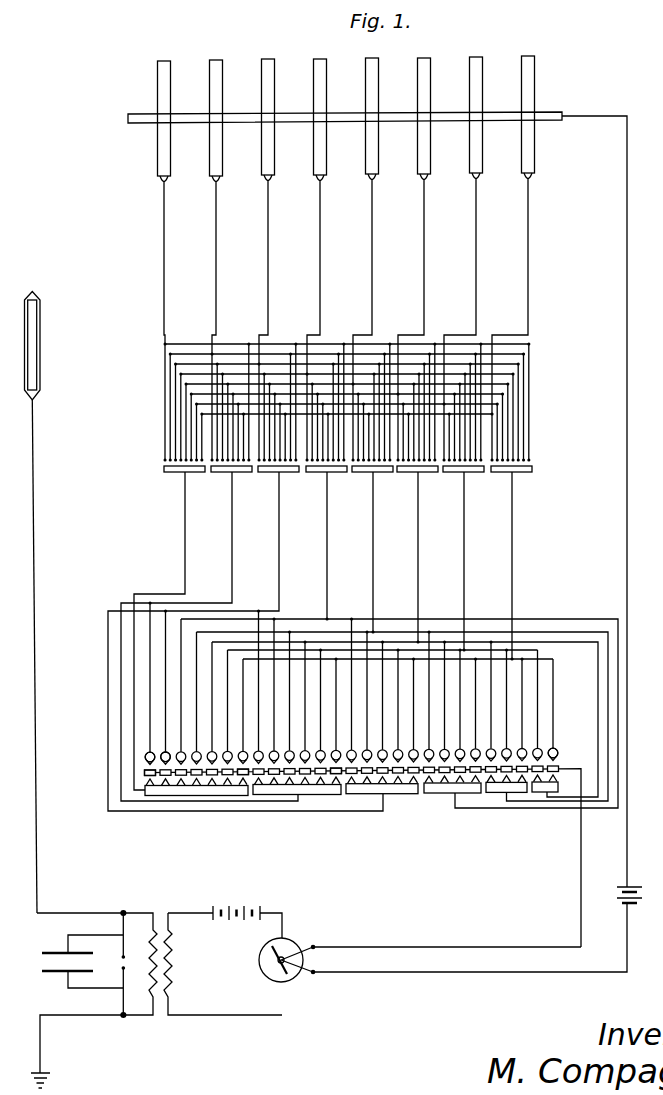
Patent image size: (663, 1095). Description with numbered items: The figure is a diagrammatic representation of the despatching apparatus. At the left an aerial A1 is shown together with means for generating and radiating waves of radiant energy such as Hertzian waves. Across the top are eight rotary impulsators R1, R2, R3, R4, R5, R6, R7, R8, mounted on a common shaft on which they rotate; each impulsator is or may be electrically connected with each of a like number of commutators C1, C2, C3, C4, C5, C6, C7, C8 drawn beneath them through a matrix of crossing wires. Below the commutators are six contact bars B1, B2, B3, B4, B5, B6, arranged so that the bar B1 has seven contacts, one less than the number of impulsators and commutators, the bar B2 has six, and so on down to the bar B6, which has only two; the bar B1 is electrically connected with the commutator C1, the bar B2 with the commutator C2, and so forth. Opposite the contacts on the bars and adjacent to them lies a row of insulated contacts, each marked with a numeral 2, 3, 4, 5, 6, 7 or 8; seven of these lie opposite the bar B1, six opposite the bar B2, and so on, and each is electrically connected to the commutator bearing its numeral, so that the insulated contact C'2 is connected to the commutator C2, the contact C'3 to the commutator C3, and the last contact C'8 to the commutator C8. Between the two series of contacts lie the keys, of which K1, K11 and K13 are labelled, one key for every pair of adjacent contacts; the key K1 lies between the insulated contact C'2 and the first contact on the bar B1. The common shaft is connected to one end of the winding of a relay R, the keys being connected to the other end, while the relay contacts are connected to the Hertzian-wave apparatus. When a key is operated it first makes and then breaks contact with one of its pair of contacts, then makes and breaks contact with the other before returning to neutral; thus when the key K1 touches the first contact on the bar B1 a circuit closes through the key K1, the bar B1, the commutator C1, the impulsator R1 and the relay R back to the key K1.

The rotary impulsator R1 is at (164, 193).
The rotary impulsator R2 is at (216, 198).
The rotary impulsator R3 is at (267, 202).
The rotary impulsator R4 is at (317, 207).
The rotary impulsator R5 is at (366, 212).
The rotary impulsator R6 is at (415, 217).
The rotary impulsator R7 is at (464, 221).
The rotary impulsator R8 is at (514, 226).
The commutator C1 is at (169, 628).
The commutator C2 is at (209, 633).
The commutator C3 is at (245, 638).
The commutator C4 is at (399, 637).
The commutator C5 is at (403, 633).
The commutator C6 is at (405, 631).
The commutator C7 is at (383, 558).
The commutator C8 is at (398, 562).
The insulated contact C'2 is at (117, 751).
The insulated contact C'3 is at (125, 737).
The insulated contact C'8 is at (603, 734).
The contact bar B1 is at (196, 781).
The contact bar B2 is at (289, 786).
The contact bar B3 is at (393, 786).
The contact bar B4 is at (463, 781).
The contact bar B5 is at (498, 782).
The contact bar B6 is at (560, 781).
The key K1 is at (144, 787).
The key K11 is at (243, 778).
The key K13 is at (336, 776).
The aerial A1 is at (35, 486).
The relay R is at (284, 957).
The insulated contact numeral 2 is at (150, 768).
The insulated contact numeral 3 is at (212, 768).
The insulated contact numeral 4 is at (267, 767).
The insulated contact numeral 5 is at (313, 767).
The insulated contact numeral 6 is at (352, 767).
The insulated contact numeral 7 is at (382, 766).
The insulated contact numeral 8 is at (398, 766).